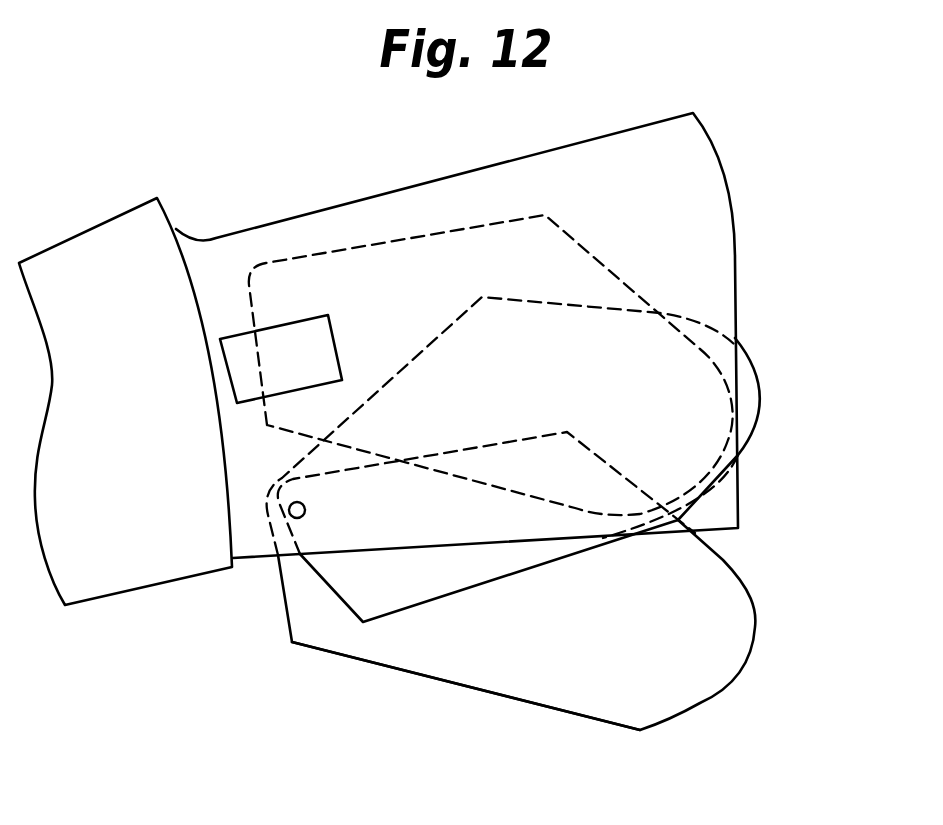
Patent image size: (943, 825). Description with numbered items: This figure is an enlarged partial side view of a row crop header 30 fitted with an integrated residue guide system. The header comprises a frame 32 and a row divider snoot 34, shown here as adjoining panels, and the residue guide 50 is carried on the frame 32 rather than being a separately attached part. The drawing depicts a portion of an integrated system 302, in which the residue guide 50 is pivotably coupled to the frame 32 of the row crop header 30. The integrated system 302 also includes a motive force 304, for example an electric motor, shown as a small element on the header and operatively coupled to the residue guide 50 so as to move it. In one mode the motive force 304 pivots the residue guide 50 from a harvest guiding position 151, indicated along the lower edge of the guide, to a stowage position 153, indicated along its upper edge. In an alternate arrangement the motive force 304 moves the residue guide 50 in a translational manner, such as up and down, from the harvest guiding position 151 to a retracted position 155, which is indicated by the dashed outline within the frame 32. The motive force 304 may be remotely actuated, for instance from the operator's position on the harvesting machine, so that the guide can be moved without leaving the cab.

The row crop header 30 is at (378, 359).
The frame 32 is at (621, 191).
The row divider snoot 34 is at (106, 373).
The residue guide 50 is at (511, 526).
The harvest guiding position 151 is at (529, 713).
The stowage position 153 is at (432, 612).
The retracted position 155 is at (430, 230).
The integrated system 302 is at (773, 483).
The motive force 304 is at (269, 366).